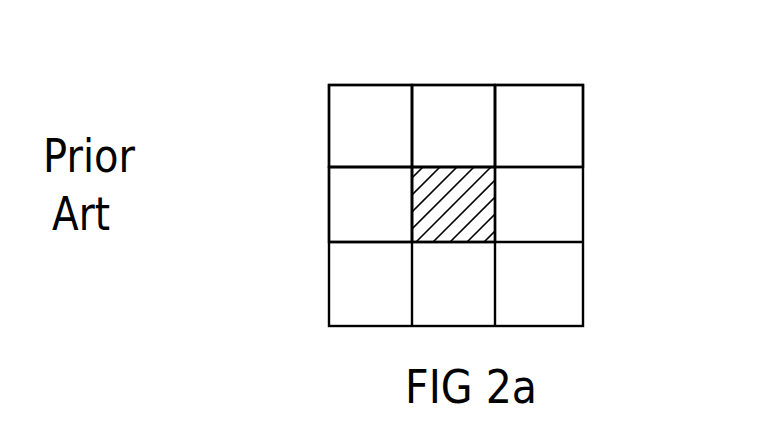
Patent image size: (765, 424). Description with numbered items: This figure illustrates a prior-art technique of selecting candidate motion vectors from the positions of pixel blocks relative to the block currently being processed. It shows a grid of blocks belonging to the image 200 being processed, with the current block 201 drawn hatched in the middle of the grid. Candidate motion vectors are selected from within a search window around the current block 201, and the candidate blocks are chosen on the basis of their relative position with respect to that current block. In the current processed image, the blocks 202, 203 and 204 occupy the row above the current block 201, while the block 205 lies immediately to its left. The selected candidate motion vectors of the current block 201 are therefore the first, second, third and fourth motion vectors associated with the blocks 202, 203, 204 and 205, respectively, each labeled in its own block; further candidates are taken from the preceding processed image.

The image being processed 200 is at (329, 283).
The current block 201 is at (455, 211).
The block 202 is at (372, 105).
The block 203 is at (468, 103).
The block 204 is at (542, 108).
The block 205 is at (329, 196).